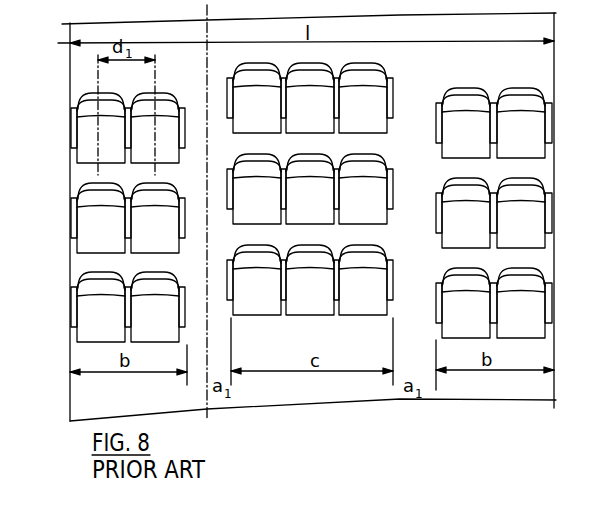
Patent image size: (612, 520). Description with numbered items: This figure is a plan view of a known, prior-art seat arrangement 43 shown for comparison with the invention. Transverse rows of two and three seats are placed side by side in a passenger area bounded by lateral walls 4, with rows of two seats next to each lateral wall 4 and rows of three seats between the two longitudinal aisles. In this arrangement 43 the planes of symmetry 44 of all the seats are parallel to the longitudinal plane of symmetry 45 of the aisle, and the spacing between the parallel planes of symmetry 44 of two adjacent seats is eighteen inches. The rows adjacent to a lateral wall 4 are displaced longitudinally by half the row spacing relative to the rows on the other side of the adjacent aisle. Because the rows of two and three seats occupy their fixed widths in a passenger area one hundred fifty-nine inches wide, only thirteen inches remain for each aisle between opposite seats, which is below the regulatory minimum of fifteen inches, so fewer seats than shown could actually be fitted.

The lateral wall 4 is at (72, 398).
The known seat arrangement 43 is at (68, 149).
The planes of symmetry of the seats 44 is at (153, 84).
The longitudinal plane of symmetry of the aisle 45 is at (211, 166).